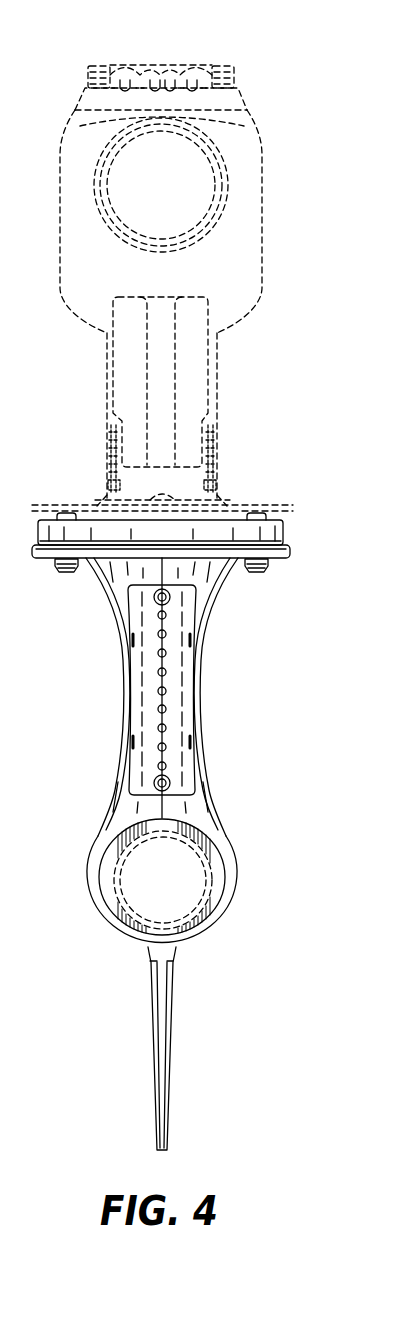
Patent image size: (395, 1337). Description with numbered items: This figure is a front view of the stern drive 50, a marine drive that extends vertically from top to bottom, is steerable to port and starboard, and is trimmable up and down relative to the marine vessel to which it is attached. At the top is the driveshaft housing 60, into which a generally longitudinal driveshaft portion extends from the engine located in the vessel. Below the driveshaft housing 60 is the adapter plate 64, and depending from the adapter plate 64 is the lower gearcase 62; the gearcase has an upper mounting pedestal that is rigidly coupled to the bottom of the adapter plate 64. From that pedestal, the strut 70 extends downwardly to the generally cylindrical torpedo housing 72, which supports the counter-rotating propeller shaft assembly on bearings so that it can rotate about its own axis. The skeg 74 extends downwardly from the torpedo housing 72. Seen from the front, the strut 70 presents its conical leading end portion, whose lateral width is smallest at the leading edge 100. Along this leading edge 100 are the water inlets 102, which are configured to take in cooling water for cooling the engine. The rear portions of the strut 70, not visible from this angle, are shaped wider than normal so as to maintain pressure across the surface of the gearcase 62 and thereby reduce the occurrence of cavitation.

The stern drive 50 is at (285, 92).
The driveshaft housing 60 is at (90, 372).
The lower gearcase 62 is at (161, 854).
The adapter plate 64 is at (288, 545).
The strut 70 is at (122, 663).
The torpedo housing 72 is at (93, 903).
The skeg 74 is at (155, 1083).
The leading edge 100 is at (180, 662).
The water inlets 102 is at (158, 728).